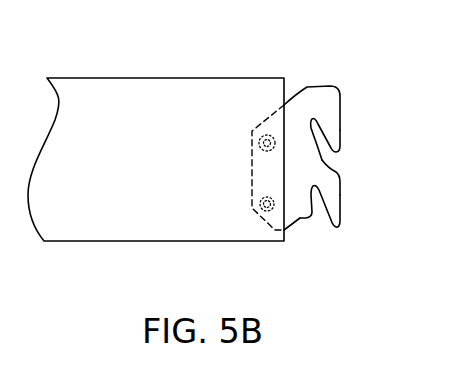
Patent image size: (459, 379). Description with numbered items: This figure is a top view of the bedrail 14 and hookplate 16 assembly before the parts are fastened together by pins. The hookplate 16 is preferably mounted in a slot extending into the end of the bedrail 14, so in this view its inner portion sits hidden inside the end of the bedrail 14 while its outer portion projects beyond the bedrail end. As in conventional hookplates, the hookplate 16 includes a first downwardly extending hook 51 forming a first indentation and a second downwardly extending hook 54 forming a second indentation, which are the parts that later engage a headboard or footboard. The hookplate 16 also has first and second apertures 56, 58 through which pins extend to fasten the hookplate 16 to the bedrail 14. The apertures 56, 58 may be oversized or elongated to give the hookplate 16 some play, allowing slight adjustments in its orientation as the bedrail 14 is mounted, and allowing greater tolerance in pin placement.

The bedrail 14 is at (85, 166).
The hookplate 16 is at (212, 41).
The first downwardly extending hook 51 is at (332, 122).
The second downwardly extending hook 54 is at (330, 196).
The first aperture 56 is at (252, 131).
The second aperture 58 is at (261, 202).